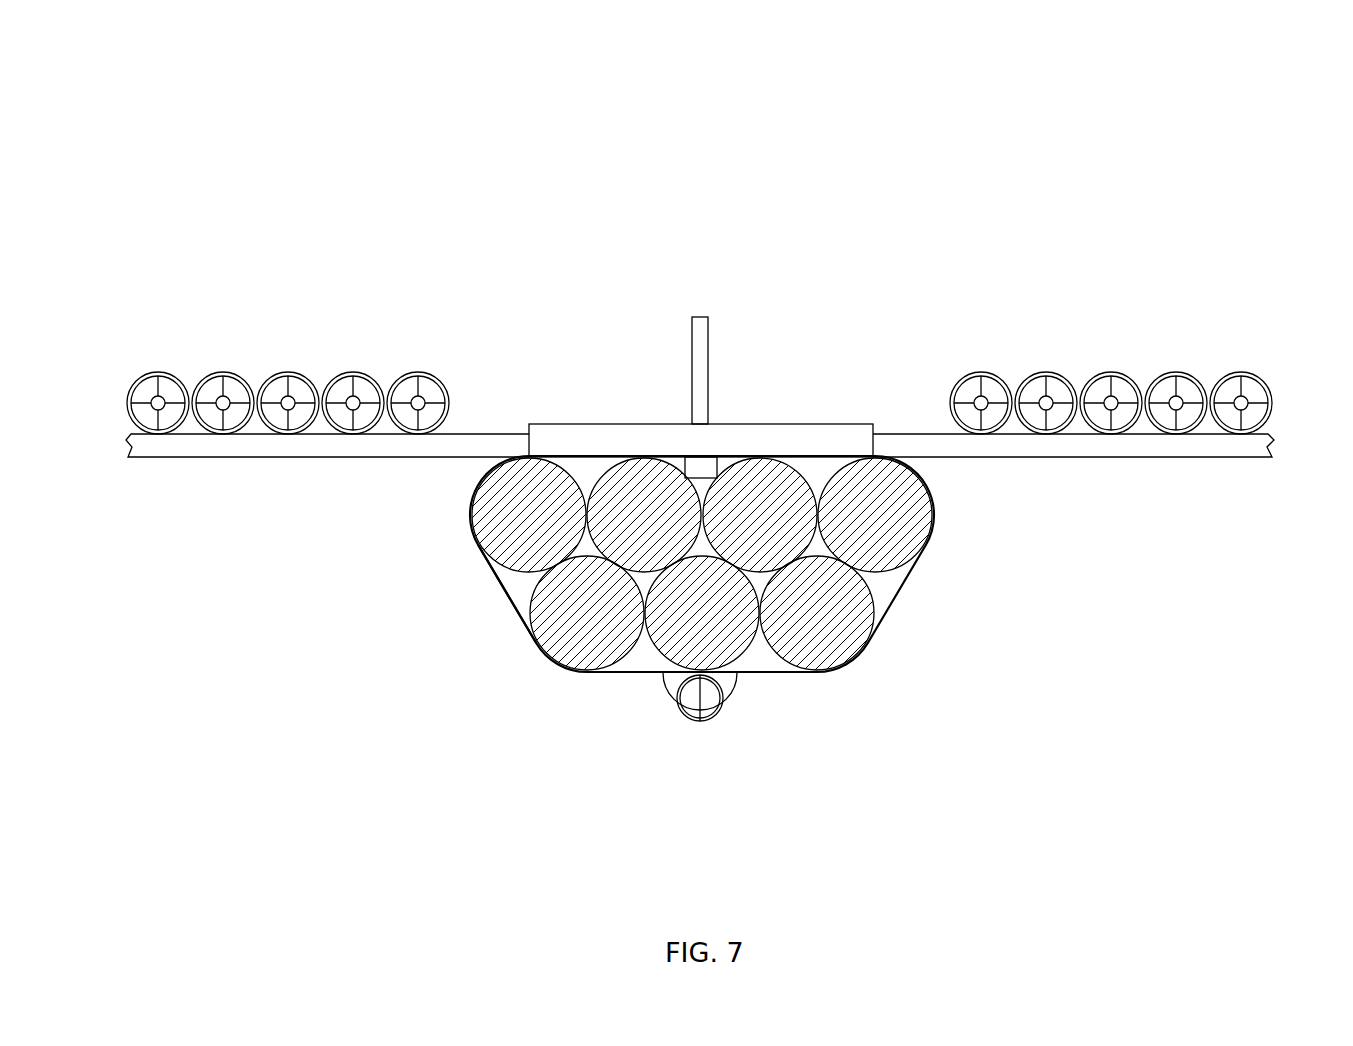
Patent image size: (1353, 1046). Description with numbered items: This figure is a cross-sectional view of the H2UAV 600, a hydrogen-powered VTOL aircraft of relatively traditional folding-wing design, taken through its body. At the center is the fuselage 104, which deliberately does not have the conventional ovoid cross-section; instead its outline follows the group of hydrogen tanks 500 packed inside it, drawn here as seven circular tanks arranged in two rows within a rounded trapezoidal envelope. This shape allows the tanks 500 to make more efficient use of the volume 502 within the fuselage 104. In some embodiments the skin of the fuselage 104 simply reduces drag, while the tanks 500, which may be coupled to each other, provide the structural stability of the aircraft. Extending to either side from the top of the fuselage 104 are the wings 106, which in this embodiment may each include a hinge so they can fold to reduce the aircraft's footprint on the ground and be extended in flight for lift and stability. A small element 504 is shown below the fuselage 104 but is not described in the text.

The fuselage 104 is at (956, 544).
The wings 106 is at (485, 443).
The tanks 500 is at (502, 512).
The volume 502 is at (520, 581).
The messenger wire 504 is at (707, 713).
The H2UAV 600 is at (1204, 158).